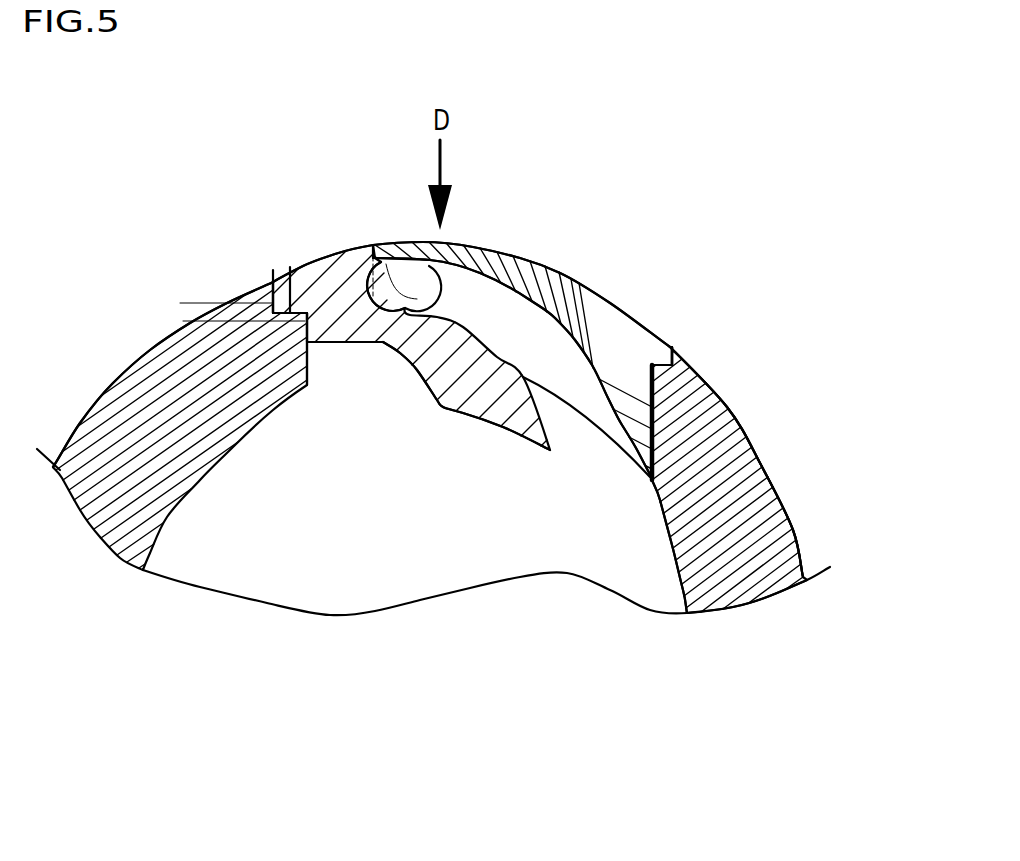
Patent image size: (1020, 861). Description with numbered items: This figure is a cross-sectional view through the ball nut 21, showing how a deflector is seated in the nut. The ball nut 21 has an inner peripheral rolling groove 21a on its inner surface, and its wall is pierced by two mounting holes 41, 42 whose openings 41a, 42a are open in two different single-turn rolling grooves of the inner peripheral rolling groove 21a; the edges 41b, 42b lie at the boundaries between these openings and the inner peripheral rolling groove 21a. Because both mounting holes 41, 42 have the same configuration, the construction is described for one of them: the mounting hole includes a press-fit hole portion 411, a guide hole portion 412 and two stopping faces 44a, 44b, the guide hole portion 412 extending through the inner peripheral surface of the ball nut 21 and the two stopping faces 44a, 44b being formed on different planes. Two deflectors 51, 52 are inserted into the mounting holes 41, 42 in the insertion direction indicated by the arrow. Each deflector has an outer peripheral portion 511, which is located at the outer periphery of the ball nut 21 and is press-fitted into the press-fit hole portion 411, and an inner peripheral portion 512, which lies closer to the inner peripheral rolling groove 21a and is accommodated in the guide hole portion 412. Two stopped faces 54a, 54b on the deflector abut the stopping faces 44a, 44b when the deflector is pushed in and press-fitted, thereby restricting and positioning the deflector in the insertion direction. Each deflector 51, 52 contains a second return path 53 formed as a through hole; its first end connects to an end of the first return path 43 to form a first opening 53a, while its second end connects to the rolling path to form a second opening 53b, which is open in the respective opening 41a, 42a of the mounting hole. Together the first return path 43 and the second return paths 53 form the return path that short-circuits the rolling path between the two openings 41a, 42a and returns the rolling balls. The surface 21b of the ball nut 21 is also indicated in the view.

The ball nut 21 is at (467, 480).
The inner peripheral rolling groove 21a is at (688, 574).
The outer peripheral surface of ring member 21b is at (790, 532).
The mounting hole 41 is at (428, 457).
The mounting hole 42 is at (307, 365).
The opening 41a is at (433, 505).
The opening 42a is at (463, 438).
The edge 41b is at (657, 632).
The edge 42b is at (649, 503).
The press-fit hole portion 411 is at (267, 278).
The guide hole portion 412 is at (648, 455).
The first return path 43 is at (405, 243).
The stopping face 44a is at (660, 348).
The stopping face 44b is at (290, 265).
The deflector 51 is at (397, 391).
The deflector 52 is at (309, 262).
The outer peripheral portion 511 is at (180, 303).
The inner peripheral portion 512 is at (604, 402).
The second return path 53 is at (467, 273).
The first opening 53a is at (386, 246).
The second opening 53b is at (560, 465).
The stopped face 54a is at (676, 377).
The stopped face 54b is at (183, 321).